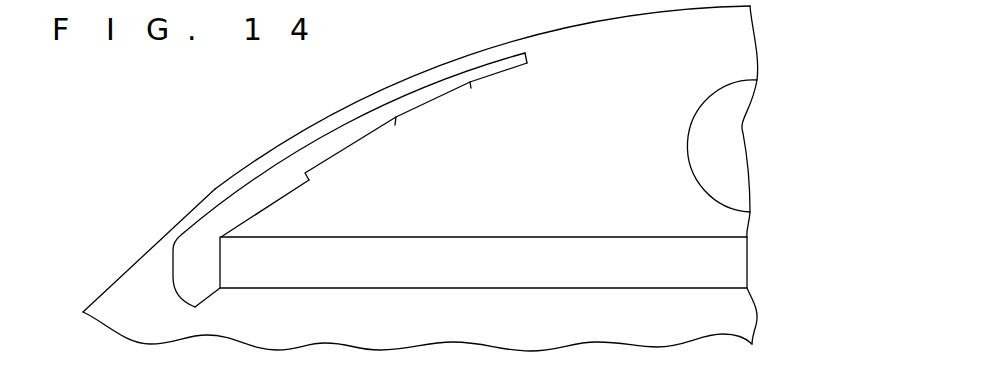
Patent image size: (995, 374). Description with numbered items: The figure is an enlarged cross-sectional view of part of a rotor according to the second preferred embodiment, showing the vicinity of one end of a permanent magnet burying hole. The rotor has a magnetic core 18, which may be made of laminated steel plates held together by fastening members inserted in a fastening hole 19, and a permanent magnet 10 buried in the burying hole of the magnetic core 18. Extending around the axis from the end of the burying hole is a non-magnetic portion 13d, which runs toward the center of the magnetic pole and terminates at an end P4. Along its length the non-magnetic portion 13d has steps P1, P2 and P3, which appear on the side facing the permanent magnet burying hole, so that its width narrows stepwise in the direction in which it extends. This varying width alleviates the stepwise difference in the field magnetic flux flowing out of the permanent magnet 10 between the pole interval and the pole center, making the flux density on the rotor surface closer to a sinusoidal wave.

The permanent magnet 10 is at (730, 259).
The non-magnetic portion 13d is at (192, 253).
The magnetic core 18 is at (735, 50).
The fastening hole 19 is at (730, 133).
The step P1 is at (312, 183).
The step P2 is at (400, 130).
The step P3 is at (472, 93).
The end P4 is at (532, 70).